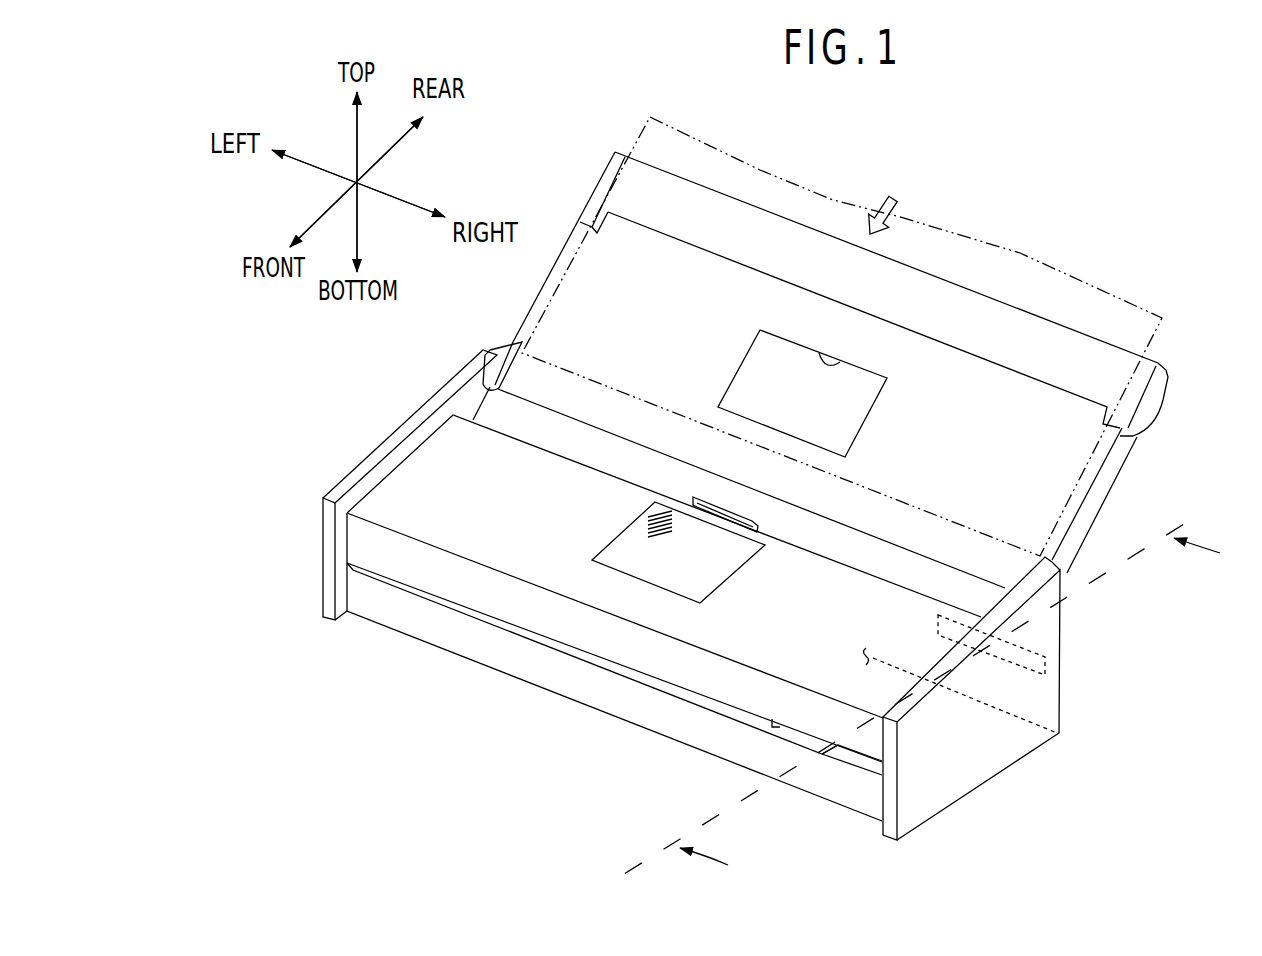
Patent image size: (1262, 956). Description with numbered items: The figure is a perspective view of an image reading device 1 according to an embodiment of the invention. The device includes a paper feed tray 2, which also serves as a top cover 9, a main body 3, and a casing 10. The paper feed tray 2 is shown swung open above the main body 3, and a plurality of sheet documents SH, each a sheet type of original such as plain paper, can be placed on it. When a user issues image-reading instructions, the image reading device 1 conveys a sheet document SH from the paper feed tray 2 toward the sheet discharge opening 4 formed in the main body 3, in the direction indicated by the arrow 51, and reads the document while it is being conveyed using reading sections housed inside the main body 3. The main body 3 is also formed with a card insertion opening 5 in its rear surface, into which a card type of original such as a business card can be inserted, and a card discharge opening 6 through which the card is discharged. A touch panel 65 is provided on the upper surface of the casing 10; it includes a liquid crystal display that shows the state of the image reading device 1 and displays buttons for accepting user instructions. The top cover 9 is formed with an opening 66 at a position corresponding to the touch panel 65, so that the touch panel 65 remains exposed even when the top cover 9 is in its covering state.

The image reading device 1 is at (960, 110).
The paper feed tray 2 is at (1093, 467).
The top cover 9 is at (861, 362).
The main body 3 is at (1078, 678).
The sheet discharge opening 4 is at (475, 613).
The card insertion opening 5 is at (1043, 653).
The card discharge opening 6 is at (848, 757).
The casing 10 is at (946, 729).
The arrow 51 is at (890, 197).
The touch panel 65 is at (672, 570).
The opening 66 is at (840, 362).
The sheet document SH is at (1043, 273).